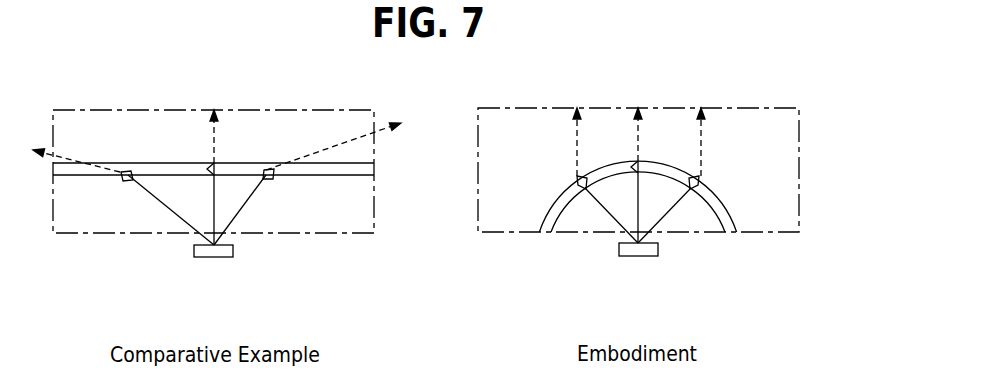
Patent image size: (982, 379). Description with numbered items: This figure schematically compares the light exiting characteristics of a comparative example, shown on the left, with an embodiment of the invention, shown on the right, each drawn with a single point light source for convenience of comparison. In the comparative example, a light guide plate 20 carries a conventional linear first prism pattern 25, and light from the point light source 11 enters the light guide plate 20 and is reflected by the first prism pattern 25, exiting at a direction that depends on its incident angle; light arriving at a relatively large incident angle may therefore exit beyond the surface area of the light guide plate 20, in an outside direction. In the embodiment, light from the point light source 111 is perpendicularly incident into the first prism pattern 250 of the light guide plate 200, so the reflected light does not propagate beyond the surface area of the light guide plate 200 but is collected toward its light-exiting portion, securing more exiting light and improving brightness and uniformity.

The light guide plate 20 is at (393, 214).
The first prism pattern 25 is at (372, 179).
The point light source 11 is at (212, 257).
The light guide plate 200 is at (819, 212).
The first prism pattern 250 is at (707, 185).
The point light source 111 is at (637, 256).